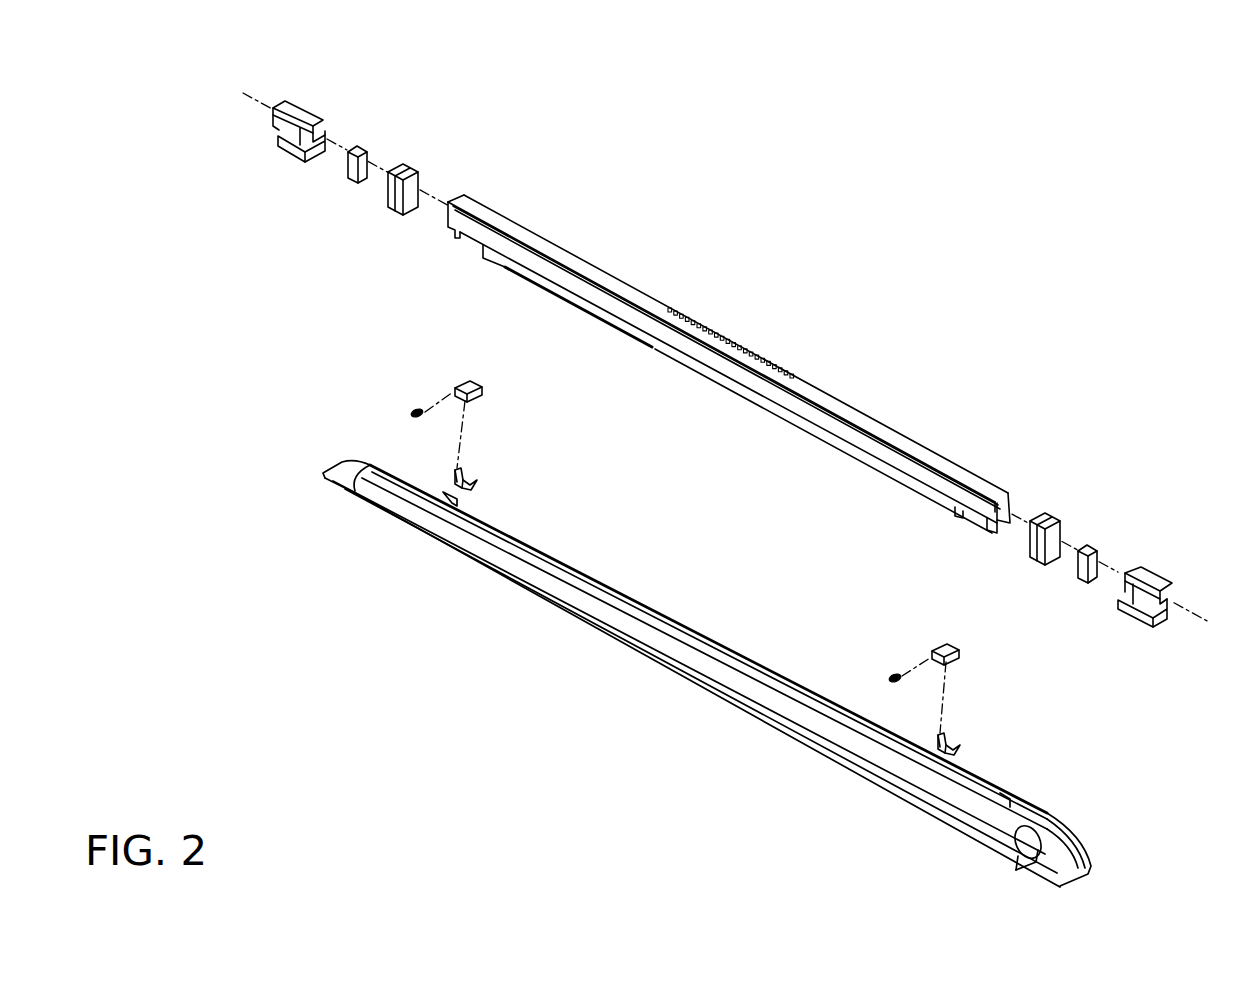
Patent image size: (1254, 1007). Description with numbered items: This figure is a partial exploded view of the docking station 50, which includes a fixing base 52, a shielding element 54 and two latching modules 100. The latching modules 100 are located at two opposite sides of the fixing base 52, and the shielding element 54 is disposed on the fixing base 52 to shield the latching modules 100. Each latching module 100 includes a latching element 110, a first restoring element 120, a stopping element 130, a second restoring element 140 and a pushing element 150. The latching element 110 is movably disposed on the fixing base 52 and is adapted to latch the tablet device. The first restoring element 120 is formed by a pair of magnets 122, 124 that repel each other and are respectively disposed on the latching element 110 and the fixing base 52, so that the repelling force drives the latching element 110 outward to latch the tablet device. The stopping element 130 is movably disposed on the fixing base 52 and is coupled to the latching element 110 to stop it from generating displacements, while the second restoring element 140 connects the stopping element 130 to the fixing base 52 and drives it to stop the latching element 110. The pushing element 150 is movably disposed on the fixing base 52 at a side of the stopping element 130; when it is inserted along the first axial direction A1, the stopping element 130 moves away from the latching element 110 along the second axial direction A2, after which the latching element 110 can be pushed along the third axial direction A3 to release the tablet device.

The docking station 50 is at (367, 550).
The fixing base 52 is at (905, 775).
The shielding element 54 is at (893, 430).
The latching module 100 is at (420, 140).
The latching element 110 is at (290, 125).
The first restoring element 120 is at (412, 277).
The magnet 122 is at (348, 168).
The magnet 124 is at (388, 198).
The stopping element 130 is at (468, 383).
The second restoring element 140 is at (411, 413).
The pushing element 150 is at (471, 478).
The first axial direction A1 is at (946, 700).
The second axial direction A2 is at (912, 668).
The third axial direction A3 is at (1230, 633).